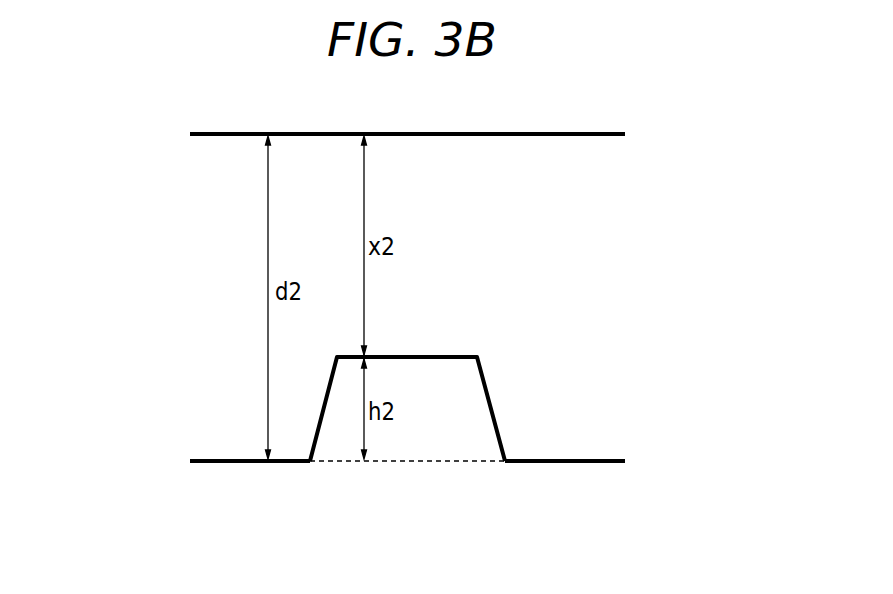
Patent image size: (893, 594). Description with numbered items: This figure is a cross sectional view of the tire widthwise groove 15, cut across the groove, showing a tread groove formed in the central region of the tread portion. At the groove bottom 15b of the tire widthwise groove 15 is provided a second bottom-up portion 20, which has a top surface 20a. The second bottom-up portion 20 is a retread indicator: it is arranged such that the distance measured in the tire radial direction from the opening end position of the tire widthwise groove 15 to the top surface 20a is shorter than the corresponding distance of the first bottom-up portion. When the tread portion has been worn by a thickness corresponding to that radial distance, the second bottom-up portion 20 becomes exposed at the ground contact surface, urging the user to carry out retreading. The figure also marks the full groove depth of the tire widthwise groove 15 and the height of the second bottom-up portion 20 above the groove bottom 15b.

The tire widthwise groove 15 is at (502, 177).
The groove bottom 15b is at (233, 462).
The second bottom-up portion 20 is at (450, 387).
The top surface 20a is at (418, 355).